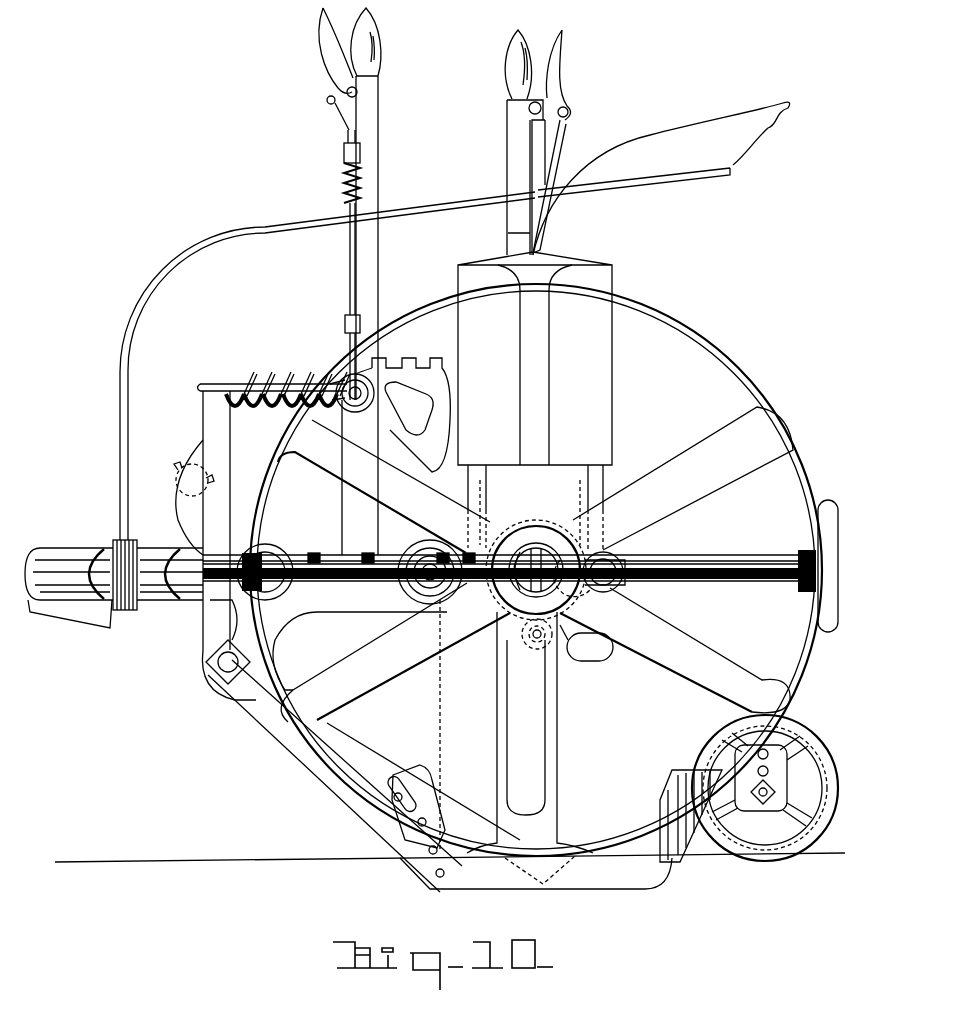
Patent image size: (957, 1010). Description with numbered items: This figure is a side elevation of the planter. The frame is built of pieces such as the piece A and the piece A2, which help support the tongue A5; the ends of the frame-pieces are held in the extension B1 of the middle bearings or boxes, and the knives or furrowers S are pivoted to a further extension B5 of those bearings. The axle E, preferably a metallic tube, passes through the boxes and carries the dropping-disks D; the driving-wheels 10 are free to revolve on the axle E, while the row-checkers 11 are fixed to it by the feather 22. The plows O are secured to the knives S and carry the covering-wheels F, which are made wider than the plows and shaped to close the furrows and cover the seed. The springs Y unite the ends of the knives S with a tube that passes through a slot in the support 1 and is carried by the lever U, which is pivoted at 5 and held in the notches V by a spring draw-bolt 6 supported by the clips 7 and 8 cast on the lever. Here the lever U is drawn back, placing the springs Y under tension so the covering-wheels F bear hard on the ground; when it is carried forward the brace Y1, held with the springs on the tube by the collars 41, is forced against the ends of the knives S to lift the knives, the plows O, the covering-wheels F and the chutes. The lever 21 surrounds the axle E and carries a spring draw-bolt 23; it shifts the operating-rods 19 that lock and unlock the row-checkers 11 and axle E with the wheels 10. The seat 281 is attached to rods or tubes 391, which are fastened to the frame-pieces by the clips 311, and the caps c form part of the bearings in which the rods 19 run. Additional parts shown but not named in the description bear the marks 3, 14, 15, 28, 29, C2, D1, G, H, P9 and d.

The driving-wheel 10 is at (800, 384).
The feather 22 is at (536, 584).
The axle E is at (516, 571).
The spokes 15 is at (485, 540).
The cap c is at (490, 720).
The bracket casing G is at (535, 401).
The bracket post H is at (466, 492).
The lever 21 is at (505, 162).
The hook blade 28 is at (568, 96).
The spring draw-bolt 23 is at (570, 122).
The seat 281 is at (700, 160).
The rods or tubes 391 is at (272, 233).
The lever U is at (380, 278).
The clip 7 is at (343, 152).
The spring draw-bolt 6 is at (348, 268).
The clip 8 is at (343, 325).
The spring Y is at (292, 376).
The collar 41 is at (356, 413).
The brace Y1 is at (326, 380).
The coil spring 3 is at (299, 409).
The support 1 is at (410, 425).
The notch V is at (182, 466).
The knife or furrower S is at (245, 736).
The extension of bearing B5 is at (210, 666).
The frame-piece A is at (72, 546).
The clip 311 is at (116, 543).
The tongue A5 is at (40, 616).
The shaft 14 is at (318, 546).
The pivot 5 is at (424, 560).
The frame-piece A2 is at (419, 550).
The bearing C2 is at (284, 560).
The bearing 29 is at (619, 560).
The operating-rod 19 is at (652, 540).
The row-checker 11 is at (820, 604).
The extension of box B1 is at (360, 638).
The dropping-disk D is at (576, 598).
The lever D1 is at (586, 643).
The covering-wheel F is at (586, 506).
The plow O is at (402, 778).
The plate P9 is at (438, 775).
The link d is at (534, 676).